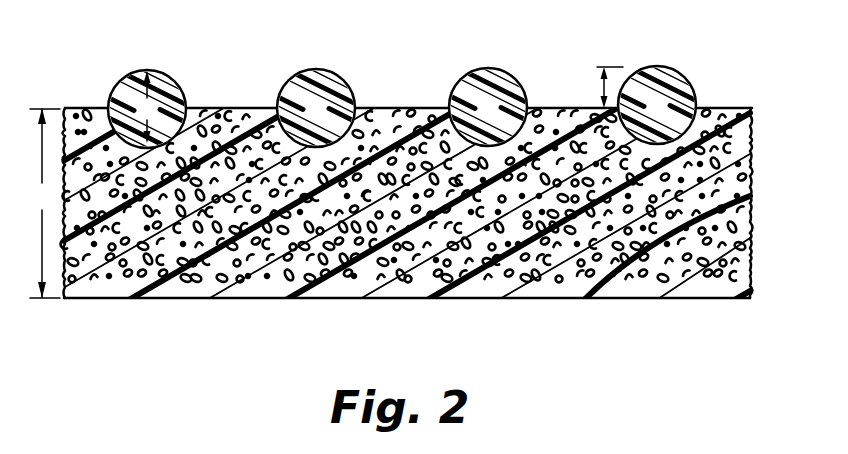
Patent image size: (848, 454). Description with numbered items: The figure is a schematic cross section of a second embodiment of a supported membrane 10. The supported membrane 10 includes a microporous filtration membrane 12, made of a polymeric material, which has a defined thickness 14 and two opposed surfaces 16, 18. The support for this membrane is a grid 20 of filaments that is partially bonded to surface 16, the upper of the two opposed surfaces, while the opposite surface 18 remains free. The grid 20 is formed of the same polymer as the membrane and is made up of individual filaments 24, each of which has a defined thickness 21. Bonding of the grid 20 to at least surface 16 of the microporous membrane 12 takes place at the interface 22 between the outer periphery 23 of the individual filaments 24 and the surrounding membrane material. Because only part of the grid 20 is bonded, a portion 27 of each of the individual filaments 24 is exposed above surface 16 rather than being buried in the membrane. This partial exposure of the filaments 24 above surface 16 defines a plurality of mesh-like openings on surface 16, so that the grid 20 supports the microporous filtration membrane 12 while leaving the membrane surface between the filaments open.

The supported membrane 10 is at (773, 68).
The microporous filtration membrane 12 is at (764, 171).
The thickness 14 is at (44, 203).
The surface 16 is at (90, 108).
The surface 18 is at (72, 299).
The grid 20 is at (706, 64).
The thickness 21 is at (147, 107).
The interface 22 is at (263, 127).
The outer periphery 23 is at (358, 116).
The filament 24 is at (171, 90).
The portion 27 is at (601, 84).